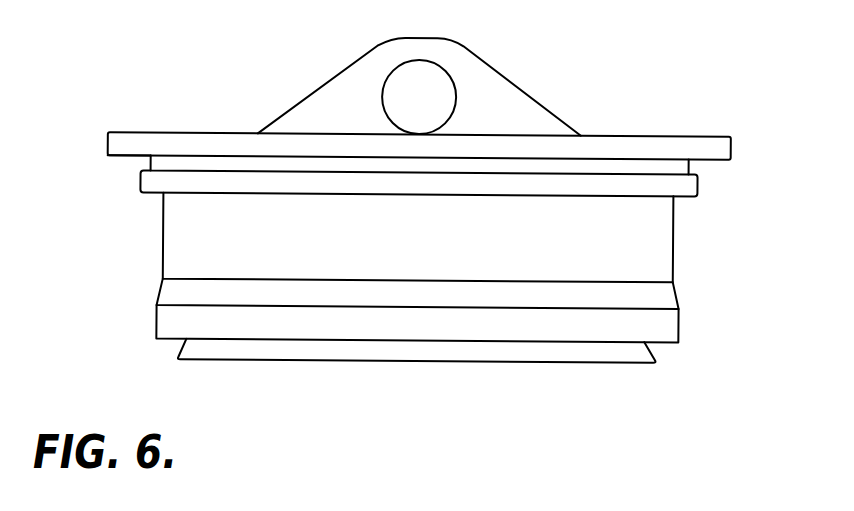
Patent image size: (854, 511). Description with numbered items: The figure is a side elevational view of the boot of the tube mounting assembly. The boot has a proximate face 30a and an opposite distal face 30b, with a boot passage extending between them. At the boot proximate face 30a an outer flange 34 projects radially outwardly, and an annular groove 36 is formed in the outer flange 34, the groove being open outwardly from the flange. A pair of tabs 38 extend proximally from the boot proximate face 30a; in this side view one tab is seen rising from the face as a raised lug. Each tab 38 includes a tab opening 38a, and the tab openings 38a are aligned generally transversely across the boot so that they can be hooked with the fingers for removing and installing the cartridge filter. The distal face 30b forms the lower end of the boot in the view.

The boot proximate face 30a is at (222, 133).
The boot distal face 30b is at (597, 362).
The outer flange 34 is at (107, 158).
The annular groove 36 is at (690, 164).
The tab 38 is at (468, 48).
The tab opening 38a is at (453, 79).